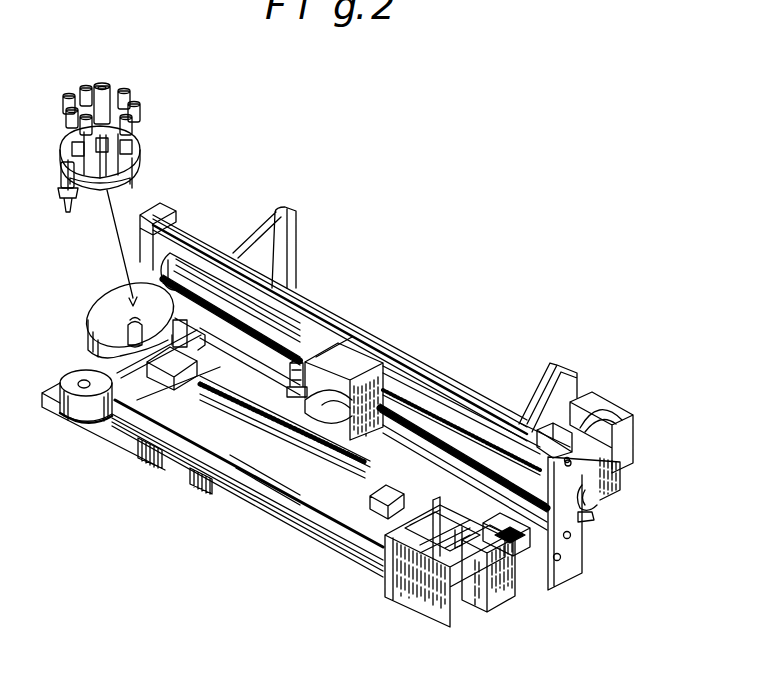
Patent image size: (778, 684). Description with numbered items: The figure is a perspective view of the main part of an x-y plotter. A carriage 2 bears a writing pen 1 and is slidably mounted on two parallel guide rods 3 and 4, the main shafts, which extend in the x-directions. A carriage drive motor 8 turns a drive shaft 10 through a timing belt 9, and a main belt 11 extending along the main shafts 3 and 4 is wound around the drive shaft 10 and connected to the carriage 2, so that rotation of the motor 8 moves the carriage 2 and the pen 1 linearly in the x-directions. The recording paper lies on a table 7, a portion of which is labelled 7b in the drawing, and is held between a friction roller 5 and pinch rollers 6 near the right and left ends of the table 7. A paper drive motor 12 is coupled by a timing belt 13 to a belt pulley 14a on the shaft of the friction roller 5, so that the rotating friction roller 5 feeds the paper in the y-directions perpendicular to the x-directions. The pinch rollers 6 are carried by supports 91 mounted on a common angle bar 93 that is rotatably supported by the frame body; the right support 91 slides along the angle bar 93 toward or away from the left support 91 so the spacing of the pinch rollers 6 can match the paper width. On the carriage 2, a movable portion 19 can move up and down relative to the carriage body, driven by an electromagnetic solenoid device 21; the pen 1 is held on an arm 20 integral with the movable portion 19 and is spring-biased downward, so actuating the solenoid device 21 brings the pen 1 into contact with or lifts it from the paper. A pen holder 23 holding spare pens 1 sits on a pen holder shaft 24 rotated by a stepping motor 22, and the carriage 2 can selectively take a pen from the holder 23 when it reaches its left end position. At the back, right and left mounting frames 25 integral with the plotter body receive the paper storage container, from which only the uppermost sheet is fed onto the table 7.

The writing pen 1 is at (303, 362).
The carriage 2 is at (327, 350).
The guide rod 3 is at (385, 368).
The guide rod 4 is at (402, 443).
The friction roller 5 is at (345, 465).
The pinch rollers 6 is at (207, 340).
The table 7 is at (297, 478).
The base foot 7b is at (143, 462).
The carriage drive motor 8 is at (583, 420).
The timing belt 9 is at (607, 423).
The drive shaft 10 is at (573, 520).
The main belt 11 is at (488, 456).
The paper drive motor 12 is at (455, 545).
The timing belt 13 is at (477, 565).
The belt pulley 14a is at (490, 537).
The movable portion 19 is at (248, 445).
The arm 20 is at (200, 447).
The electromagnetic solenoid device 21 is at (350, 415).
The stepping motor 22 is at (76, 412).
The pen holder 23 is at (81, 70).
The pen holder shaft 24 is at (132, 326).
The mounting frames 25 is at (290, 208).
The supports 91 is at (178, 380).
The angle bar 93 is at (300, 480).